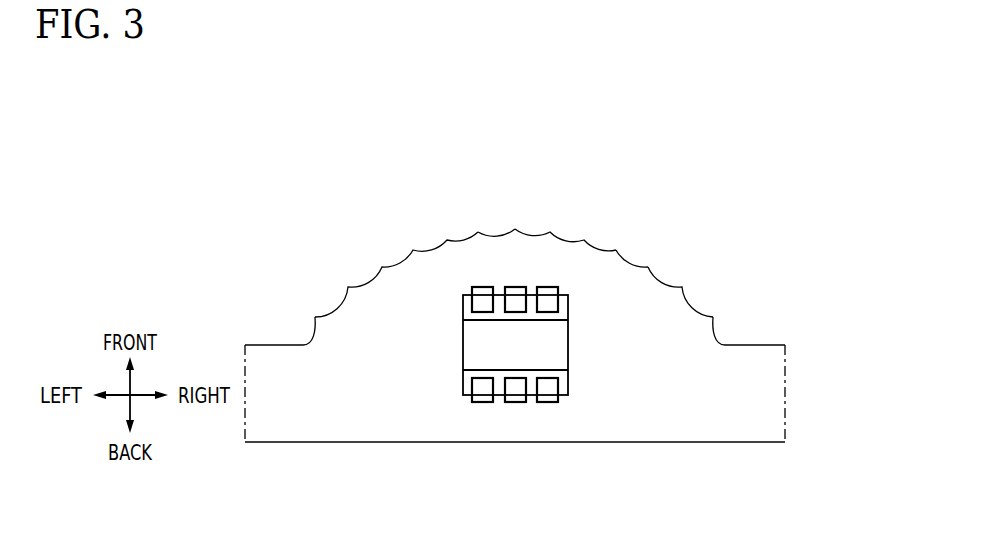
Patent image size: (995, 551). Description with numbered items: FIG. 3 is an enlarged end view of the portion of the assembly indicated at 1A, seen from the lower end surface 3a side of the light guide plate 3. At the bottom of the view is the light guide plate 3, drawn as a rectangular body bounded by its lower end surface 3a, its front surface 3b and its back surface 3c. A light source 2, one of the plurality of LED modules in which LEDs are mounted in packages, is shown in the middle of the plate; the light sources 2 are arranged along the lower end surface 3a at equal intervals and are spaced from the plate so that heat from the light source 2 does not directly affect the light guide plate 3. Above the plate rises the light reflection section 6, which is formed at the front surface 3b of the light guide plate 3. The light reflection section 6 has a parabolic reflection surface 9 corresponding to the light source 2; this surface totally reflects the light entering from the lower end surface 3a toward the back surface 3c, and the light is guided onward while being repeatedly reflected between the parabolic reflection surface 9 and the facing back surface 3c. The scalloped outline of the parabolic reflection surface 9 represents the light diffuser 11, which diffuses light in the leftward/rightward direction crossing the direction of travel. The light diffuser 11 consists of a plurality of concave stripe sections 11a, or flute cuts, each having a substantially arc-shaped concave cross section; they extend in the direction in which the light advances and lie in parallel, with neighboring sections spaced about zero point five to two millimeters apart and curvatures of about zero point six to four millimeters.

The electronic device 1A is at (655, 165).
The light source 2 is at (515, 345).
The light guide plate 3 is at (270, 346).
The lower end surface 3a is at (763, 395).
The front surface 3b is at (755, 345).
The back surface 3c is at (753, 442).
The light reflection section 6 is at (550, 237).
The parabolic reflection surface 9 is at (498, 236).
The light diffuser 11 is at (525, 236).
The concave stripe section 11a is at (632, 262).